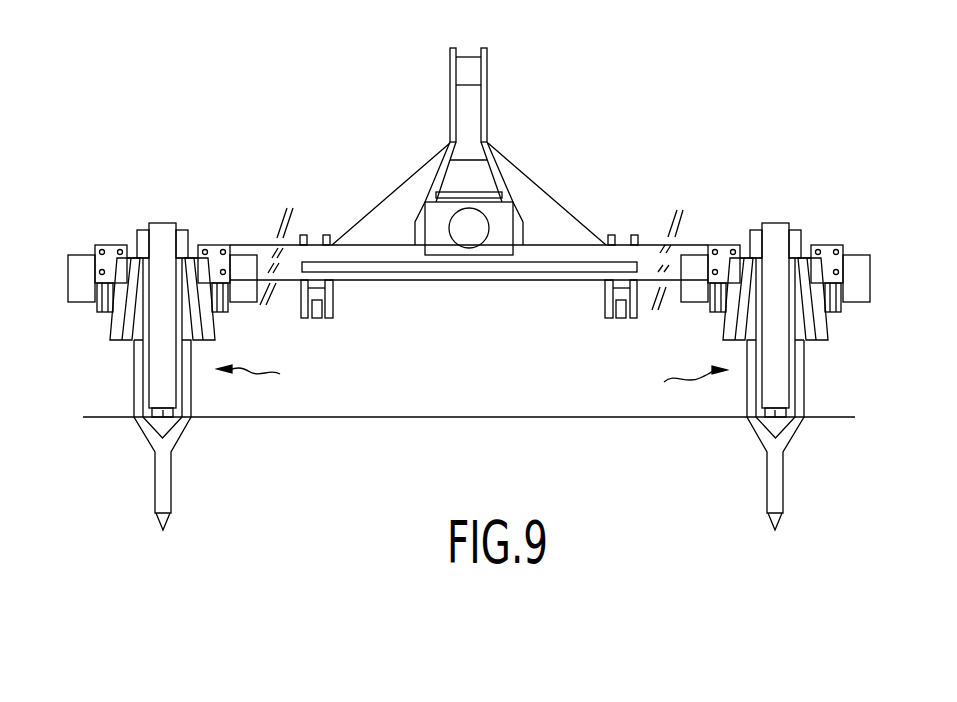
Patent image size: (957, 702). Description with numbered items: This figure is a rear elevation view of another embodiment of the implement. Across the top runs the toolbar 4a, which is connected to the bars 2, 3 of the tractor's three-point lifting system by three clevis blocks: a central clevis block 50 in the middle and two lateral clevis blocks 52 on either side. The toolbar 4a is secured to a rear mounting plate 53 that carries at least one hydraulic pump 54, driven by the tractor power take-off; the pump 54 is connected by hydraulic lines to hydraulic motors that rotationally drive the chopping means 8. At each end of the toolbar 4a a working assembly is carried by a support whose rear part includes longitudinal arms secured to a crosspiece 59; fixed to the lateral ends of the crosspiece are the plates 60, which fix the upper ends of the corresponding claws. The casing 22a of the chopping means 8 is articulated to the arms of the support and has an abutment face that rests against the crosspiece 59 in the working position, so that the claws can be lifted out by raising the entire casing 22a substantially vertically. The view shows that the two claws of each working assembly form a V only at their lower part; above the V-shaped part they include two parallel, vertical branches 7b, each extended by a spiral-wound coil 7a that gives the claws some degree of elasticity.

The bar of the three-point lifting system 2 is at (470, 72).
The central clevis block 50 is at (487, 104).
The toolbar 4a is at (571, 246).
The casing 22a is at (163, 240).
The plate 60 is at (112, 247).
The crosspiece 59 is at (248, 262).
The spiral-wound coil 7a is at (108, 336).
The parallel vertical branch 7b is at (133, 404).
The chopping means 8 is at (472, 382).
The bar of the three-point lifting system 3 is at (316, 300).
The lateral clevis block 52 is at (334, 300).
The rear mounting plate 53 is at (537, 272).
The hydraulic pump 54 is at (469, 249).